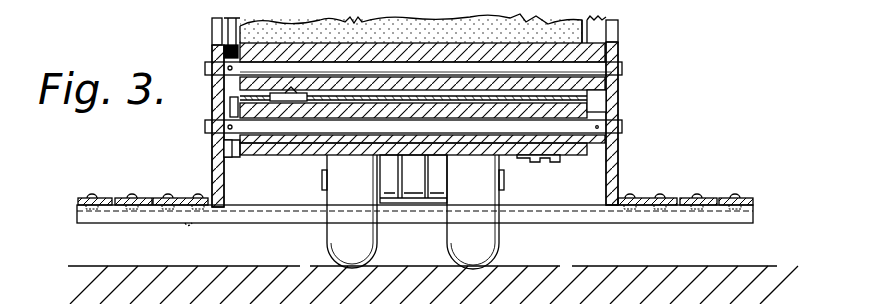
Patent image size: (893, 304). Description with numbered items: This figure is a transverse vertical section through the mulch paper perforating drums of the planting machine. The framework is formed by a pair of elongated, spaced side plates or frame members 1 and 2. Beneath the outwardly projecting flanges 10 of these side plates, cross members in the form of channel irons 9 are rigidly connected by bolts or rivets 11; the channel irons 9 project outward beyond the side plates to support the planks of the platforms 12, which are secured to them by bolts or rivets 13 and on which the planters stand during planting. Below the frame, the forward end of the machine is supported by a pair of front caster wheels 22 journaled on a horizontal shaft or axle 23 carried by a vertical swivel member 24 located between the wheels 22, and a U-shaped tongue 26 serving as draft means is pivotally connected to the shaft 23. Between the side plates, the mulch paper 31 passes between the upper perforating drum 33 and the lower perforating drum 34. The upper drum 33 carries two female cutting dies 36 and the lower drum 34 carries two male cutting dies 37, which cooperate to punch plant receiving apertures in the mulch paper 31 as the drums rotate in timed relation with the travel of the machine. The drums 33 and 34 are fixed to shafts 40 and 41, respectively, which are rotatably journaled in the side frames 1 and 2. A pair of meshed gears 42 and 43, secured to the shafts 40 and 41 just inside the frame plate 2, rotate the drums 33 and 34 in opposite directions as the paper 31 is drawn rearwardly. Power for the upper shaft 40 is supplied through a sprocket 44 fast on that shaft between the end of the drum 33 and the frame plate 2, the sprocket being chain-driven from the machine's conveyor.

The side plate 1 is at (627, 152).
The side plate 2 is at (204, 26).
The channel iron 9 is at (96, 224).
The outwardly projecting flange 10 is at (192, 210).
The bolt or rivet 11 is at (205, 197).
The platform 12 is at (136, 197).
The bolt or rivet 13 is at (92, 197).
The front caster wheel 22 is at (330, 238).
The horizontal shaft 23 is at (320, 182).
The swivel member 24 is at (413, 198).
The U-shaped tongue 26 is at (388, 183).
The mulch paper 31 is at (606, 97).
The upper perforating drum 33 is at (584, 42).
The lower perforating drum 34 is at (275, 157).
The female cutting die 36 is at (302, 95).
The male cutting die 37 is at (279, 102).
The shaft 40 is at (623, 69).
The shaft 41 is at (623, 128).
The gear 42 is at (212, 52).
The gear 43 is at (212, 153).
The sprocket 44 is at (232, 47).